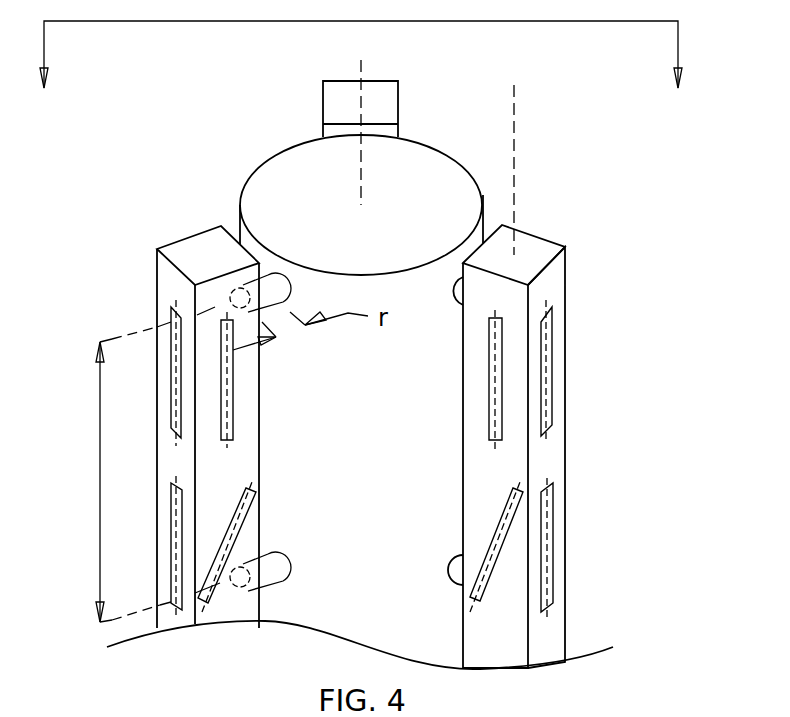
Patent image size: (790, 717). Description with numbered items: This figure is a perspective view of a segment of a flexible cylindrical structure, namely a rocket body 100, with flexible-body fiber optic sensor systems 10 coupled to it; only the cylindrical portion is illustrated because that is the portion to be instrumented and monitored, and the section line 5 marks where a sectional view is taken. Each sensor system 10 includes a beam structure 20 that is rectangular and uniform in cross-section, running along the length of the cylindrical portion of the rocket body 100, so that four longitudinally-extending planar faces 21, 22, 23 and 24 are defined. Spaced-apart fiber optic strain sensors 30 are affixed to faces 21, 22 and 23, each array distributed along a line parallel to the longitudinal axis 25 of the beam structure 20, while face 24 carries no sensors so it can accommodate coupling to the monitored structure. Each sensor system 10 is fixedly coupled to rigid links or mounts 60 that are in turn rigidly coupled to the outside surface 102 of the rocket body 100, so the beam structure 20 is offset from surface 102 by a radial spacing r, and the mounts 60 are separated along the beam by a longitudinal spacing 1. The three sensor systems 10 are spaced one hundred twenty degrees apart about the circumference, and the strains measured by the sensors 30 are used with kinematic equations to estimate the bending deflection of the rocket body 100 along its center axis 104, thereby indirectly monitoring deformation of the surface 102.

The section line 5- 5 is at (360, 70).
The flexible-body fiber optic sensor system 10 is at (375, 353).
The rocket body 100 is at (275, 147).
The center axis 104 is at (364, 152).
The outside surface 102 is at (307, 619).
The beam structure 20 is at (557, 441).
The face 21 is at (518, 298).
The face 22 is at (556, 458).
The face 23 is at (548, 242).
The face 24 is at (485, 234).
The longitudinal axis 25 is at (515, 133).
The fiber optic sensor 30 is at (502, 380).
The rigid link or mount 60 is at (447, 576).
The pitch dimension 1 is at (156, 464).